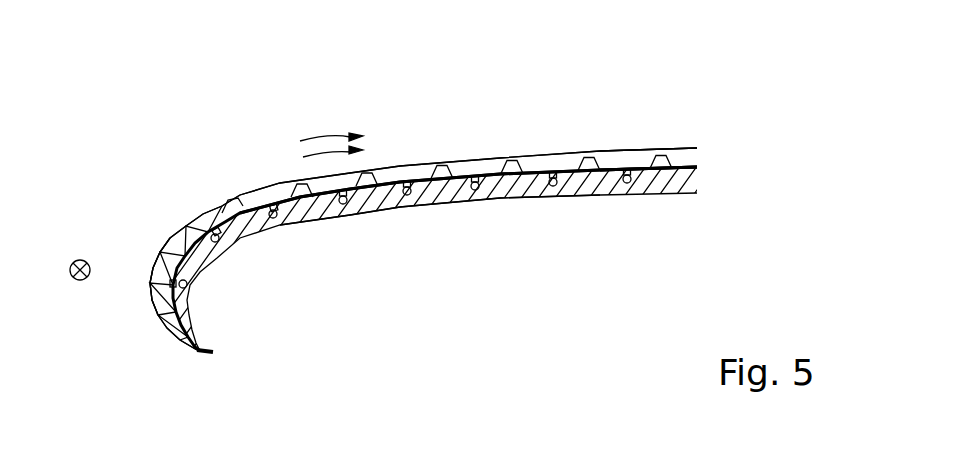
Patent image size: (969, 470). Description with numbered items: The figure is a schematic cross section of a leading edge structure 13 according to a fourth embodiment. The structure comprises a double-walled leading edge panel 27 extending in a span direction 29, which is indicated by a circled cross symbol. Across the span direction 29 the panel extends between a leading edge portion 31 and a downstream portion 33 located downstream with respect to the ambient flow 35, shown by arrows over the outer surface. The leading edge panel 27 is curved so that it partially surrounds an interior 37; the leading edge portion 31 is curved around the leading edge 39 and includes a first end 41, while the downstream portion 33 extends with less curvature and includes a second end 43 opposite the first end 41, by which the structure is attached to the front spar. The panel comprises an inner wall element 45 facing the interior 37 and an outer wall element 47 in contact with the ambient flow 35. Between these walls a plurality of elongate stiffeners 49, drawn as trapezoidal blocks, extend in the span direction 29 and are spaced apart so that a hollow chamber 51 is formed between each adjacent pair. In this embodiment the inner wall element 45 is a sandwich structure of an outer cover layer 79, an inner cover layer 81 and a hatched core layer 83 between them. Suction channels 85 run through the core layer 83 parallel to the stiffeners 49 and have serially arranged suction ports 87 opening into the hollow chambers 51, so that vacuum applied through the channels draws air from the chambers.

The leading edge structure 13 is at (170, 145).
The leading edge panel 27 is at (260, 185).
The span direction 29 is at (74, 261).
The leading edge portion 31 is at (148, 228).
The downstream portion 33 is at (510, 125).
The ambient flow 35 is at (318, 137).
The interior 37 is at (286, 280).
The leading edge 39 is at (150, 282).
The first end 41 is at (205, 355).
The second end 43 is at (697, 157).
The inner wall element 45 is at (363, 205).
The outer wall element 47 is at (428, 168).
The stiffeners 49 is at (583, 155).
The hollow chamber 51 is at (250, 200).
The outer cover layer 79 is at (618, 180).
The inner cover layer 81 is at (515, 200).
The core layer 83 is at (540, 198).
The suction channels 85 is at (473, 191).
The suction ports 87 is at (405, 178).